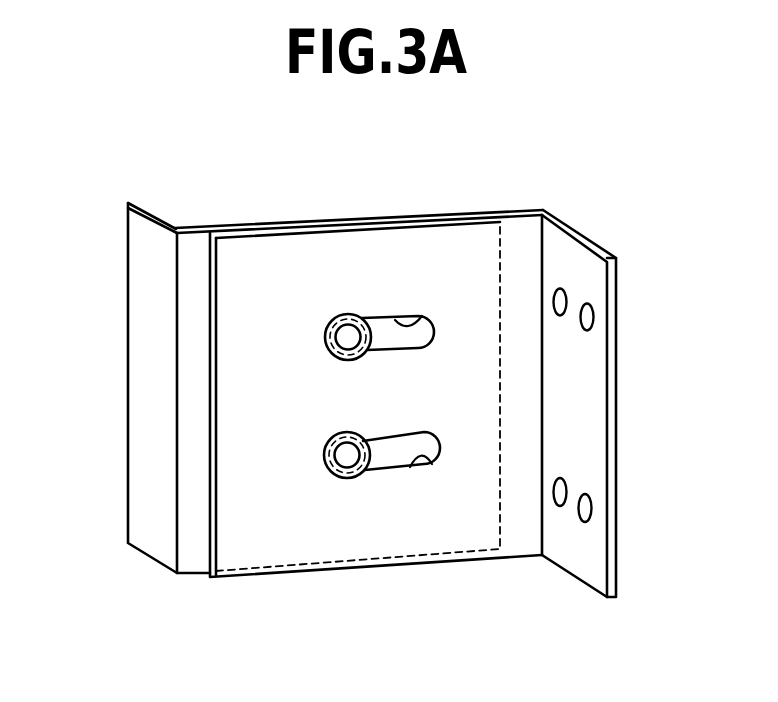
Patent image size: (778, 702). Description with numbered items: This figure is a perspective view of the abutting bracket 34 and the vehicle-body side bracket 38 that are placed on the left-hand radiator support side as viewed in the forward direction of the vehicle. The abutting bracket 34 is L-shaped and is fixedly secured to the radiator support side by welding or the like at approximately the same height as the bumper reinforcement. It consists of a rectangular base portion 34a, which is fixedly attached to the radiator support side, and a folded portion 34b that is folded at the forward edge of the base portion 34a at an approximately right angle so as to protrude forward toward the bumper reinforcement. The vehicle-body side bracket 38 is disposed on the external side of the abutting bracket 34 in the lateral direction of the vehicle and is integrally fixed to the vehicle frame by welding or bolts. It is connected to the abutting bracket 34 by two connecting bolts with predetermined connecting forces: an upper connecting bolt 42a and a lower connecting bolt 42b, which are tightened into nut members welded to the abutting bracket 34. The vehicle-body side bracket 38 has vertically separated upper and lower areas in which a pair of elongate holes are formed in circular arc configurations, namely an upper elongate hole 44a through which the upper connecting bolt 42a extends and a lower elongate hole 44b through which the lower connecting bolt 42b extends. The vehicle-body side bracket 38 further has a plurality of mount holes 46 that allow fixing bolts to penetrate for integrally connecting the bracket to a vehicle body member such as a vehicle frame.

The abutting bracket 34 is at (178, 202).
The base portion 34a is at (277, 223).
The folded portion 34b is at (145, 288).
The vehicle-body side bracket 38 is at (640, 349).
The upper connecting bolt 42a is at (348, 337).
The lower connecting bolt 42b is at (347, 455).
The upper elongate hole 44a is at (422, 316).
The lower elongate hole 44b is at (425, 457).
The mount holes 46 is at (577, 303).